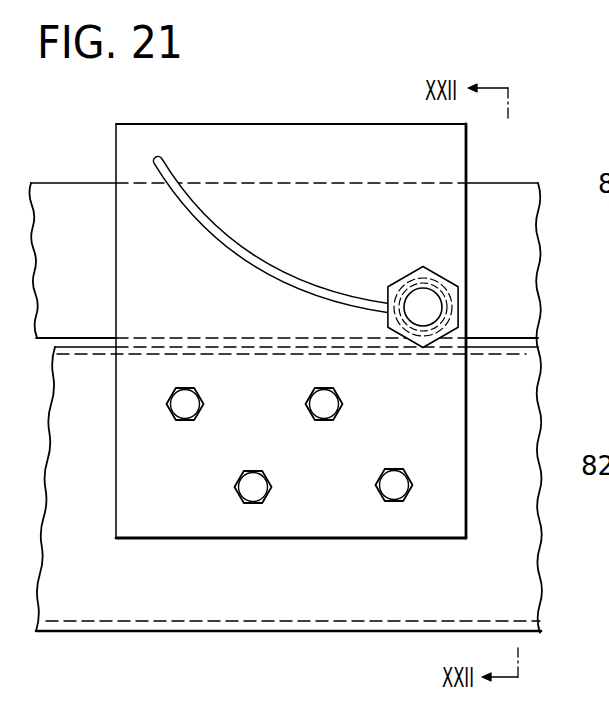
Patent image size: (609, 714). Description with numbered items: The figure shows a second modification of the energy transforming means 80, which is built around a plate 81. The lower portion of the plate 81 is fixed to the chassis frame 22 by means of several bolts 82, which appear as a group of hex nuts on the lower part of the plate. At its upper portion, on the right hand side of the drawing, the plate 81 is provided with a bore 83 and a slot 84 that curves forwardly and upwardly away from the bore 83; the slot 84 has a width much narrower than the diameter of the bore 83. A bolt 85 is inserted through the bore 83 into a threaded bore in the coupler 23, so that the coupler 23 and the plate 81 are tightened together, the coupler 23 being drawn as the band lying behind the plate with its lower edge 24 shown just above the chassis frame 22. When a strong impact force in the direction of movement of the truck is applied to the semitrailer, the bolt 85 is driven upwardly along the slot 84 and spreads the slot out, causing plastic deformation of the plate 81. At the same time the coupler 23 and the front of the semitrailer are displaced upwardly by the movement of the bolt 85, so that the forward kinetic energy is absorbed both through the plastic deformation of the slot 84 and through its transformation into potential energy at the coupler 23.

The chassis frame 22 is at (267, 633).
The coupler 23 is at (494, 183).
The band edge 24 is at (536, 342).
The energy transforming means 80 is at (325, 303).
The plate 81 is at (277, 123).
The bolts 82 is at (378, 492).
The bore 83 is at (432, 307).
The slot 84 is at (232, 240).
The bolt 85 is at (403, 278).